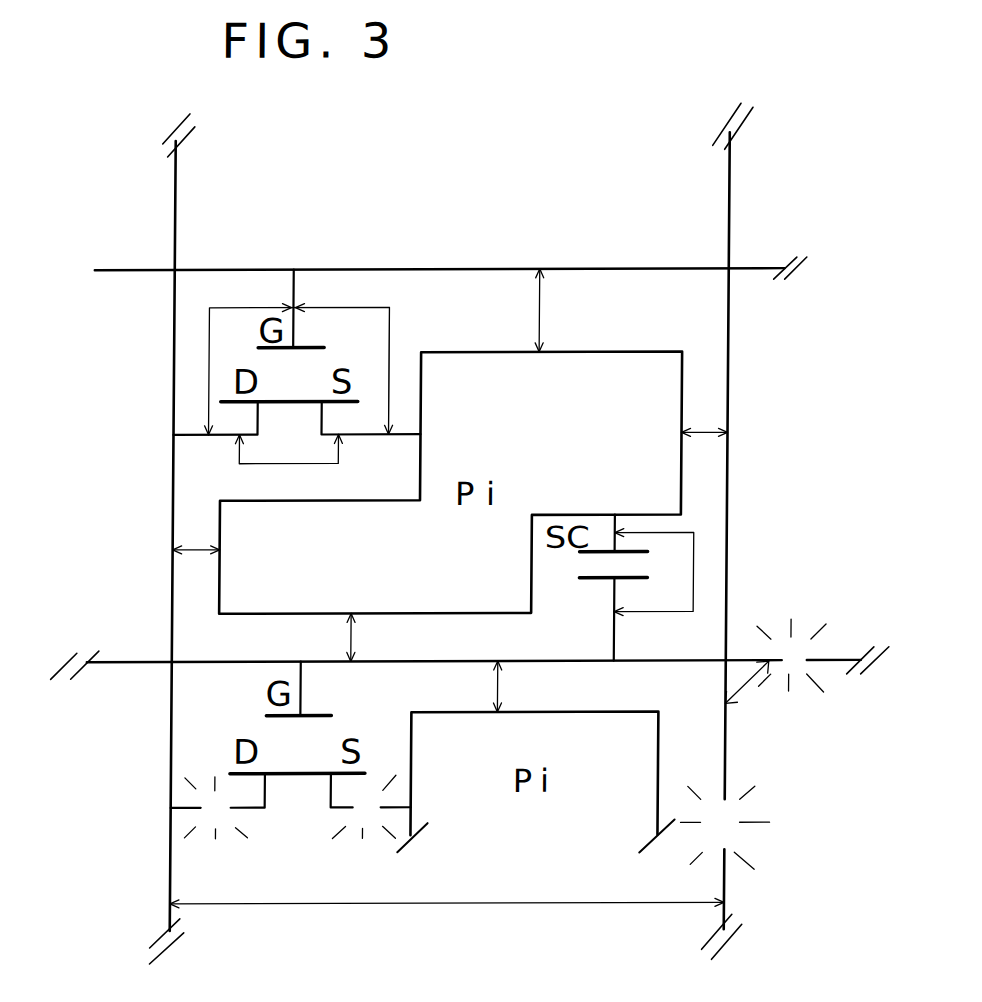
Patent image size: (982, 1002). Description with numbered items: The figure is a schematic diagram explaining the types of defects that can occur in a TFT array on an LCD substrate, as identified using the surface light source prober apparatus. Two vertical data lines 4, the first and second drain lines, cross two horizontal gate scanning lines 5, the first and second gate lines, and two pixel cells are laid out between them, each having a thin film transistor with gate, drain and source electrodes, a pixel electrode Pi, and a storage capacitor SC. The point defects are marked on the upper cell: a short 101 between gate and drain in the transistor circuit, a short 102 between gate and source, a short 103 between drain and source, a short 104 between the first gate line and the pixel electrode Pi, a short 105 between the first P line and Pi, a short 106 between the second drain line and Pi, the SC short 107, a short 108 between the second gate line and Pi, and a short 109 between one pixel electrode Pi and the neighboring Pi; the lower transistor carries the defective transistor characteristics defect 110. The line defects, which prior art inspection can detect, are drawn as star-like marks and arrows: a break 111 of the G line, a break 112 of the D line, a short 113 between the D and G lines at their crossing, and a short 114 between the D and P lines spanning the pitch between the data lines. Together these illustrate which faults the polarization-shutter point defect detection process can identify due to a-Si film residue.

The data line 4 is at (176, 178).
The gate scanning line 5 is at (237, 268).
The short between gate and drain 101 is at (208, 335).
The short between gate and source 102 is at (388, 320).
The short between drain and source 103 is at (293, 463).
The short between G1 and pixel electrode 104 is at (538, 305).
The short between P1 and pixel electrode 105 is at (200, 547).
The short between D2 and pixel electrode 106 is at (700, 433).
The SC short 107 is at (694, 572).
The short between G2 and pixel electrode 108 is at (350, 637).
The short between pixel electrodes 109 is at (503, 685).
The defective transistor characteristics defect 110 is at (375, 812).
The break of G line 111 is at (800, 652).
The break of D line 112 is at (732, 813).
The short between D and G lines 113 is at (770, 677).
The short between D and P lines 114 is at (458, 903).